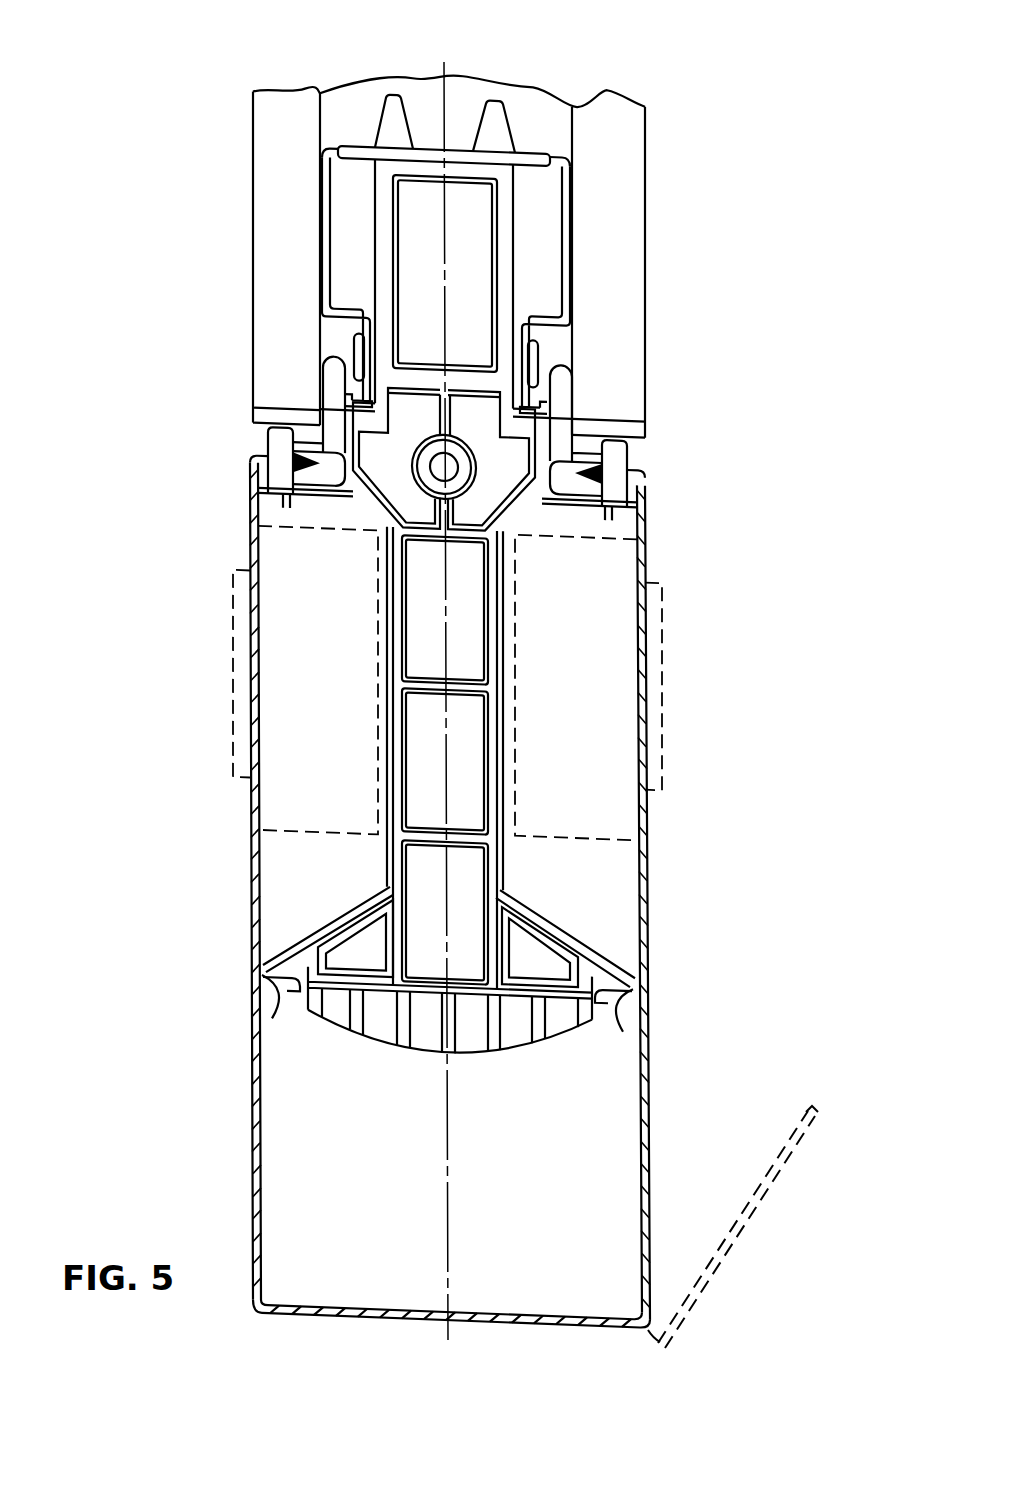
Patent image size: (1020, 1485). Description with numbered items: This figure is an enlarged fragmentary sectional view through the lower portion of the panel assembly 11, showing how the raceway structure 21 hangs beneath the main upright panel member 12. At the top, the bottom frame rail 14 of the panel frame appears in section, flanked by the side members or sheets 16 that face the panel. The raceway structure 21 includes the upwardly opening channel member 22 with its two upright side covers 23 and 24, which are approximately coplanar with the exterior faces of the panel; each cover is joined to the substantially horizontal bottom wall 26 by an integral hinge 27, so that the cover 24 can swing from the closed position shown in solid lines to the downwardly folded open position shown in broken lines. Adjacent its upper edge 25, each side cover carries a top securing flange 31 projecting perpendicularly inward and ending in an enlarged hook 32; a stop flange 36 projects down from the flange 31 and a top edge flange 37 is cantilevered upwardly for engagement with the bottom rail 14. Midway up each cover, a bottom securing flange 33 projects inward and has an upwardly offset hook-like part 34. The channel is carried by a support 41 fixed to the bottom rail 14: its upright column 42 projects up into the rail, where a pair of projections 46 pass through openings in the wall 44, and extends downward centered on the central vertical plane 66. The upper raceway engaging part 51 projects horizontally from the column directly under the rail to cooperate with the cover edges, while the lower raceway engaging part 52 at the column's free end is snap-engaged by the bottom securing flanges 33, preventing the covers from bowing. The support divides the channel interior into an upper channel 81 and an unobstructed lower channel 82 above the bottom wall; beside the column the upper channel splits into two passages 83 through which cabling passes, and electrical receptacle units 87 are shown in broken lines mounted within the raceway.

The panel assembly 11 is at (138, 400).
The main upright panel member 12 is at (660, 186).
The bottom frame rail 14 is at (553, 352).
The side members or sheets 16 is at (270, 252).
The raceway structure 21 is at (168, 858).
The channel member 22 is at (665, 862).
The side cover 23 is at (258, 1118).
The side cover 24 is at (642, 1102).
The upper edge 25 is at (637, 475).
The bottom wall 26 is at (535, 1315).
The integral hinge 27 is at (293, 1307).
The top securing flange 31 is at (260, 458).
The hook 32 is at (607, 478).
The bottom securing flange 33 is at (262, 1004).
The upwardly offset part 34 is at (610, 1002).
The stop flange 36 is at (273, 483).
The top edge flange 37 is at (273, 442).
The support 41 is at (378, 778).
The upright column 42 is at (490, 687).
The wall 44 is at (455, 153).
The projections 46 is at (395, 125).
The upper raceway engaging part 51 is at (355, 505).
The lower raceway engaging part 52 is at (575, 925).
The central vertical plane 66 is at (452, 1185).
The upper channel 81 is at (602, 792).
The lower channel 82 is at (593, 1185).
The passages 83 is at (304, 884).
The electrical receptacle units 87 is at (310, 665).